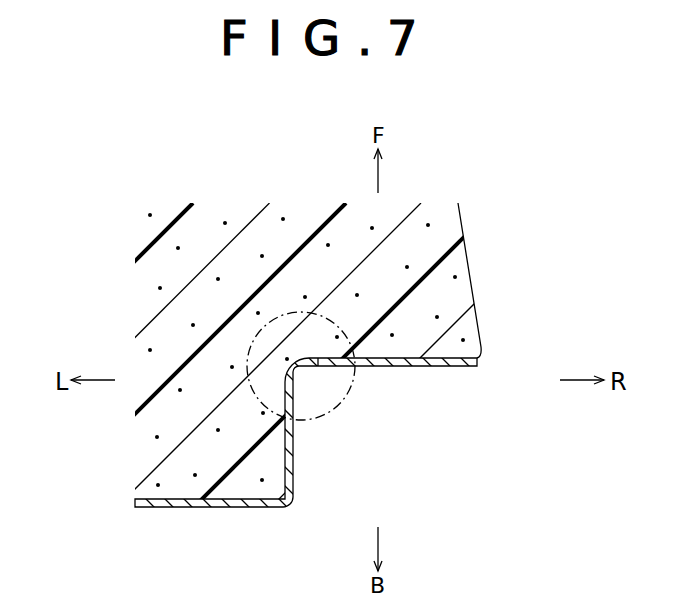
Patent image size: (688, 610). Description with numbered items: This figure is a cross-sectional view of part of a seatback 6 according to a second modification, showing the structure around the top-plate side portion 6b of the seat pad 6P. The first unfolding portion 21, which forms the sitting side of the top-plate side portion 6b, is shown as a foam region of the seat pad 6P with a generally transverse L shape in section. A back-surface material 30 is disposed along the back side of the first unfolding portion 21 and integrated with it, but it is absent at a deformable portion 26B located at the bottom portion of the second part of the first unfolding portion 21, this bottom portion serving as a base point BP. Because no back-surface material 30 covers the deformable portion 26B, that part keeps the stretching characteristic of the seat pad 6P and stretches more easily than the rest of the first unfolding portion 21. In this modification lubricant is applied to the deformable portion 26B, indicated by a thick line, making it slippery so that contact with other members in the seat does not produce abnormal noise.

The seatback 6 is at (488, 217).
The first unfolding portion 21 is at (326, 358).
The top-plate side portion 6b is at (287, 358).
The seat pad 6P is at (447, 297).
The deformable portion 26B is at (303, 372).
The back-surface material 30 is at (455, 368).
The base point BP is at (322, 420).